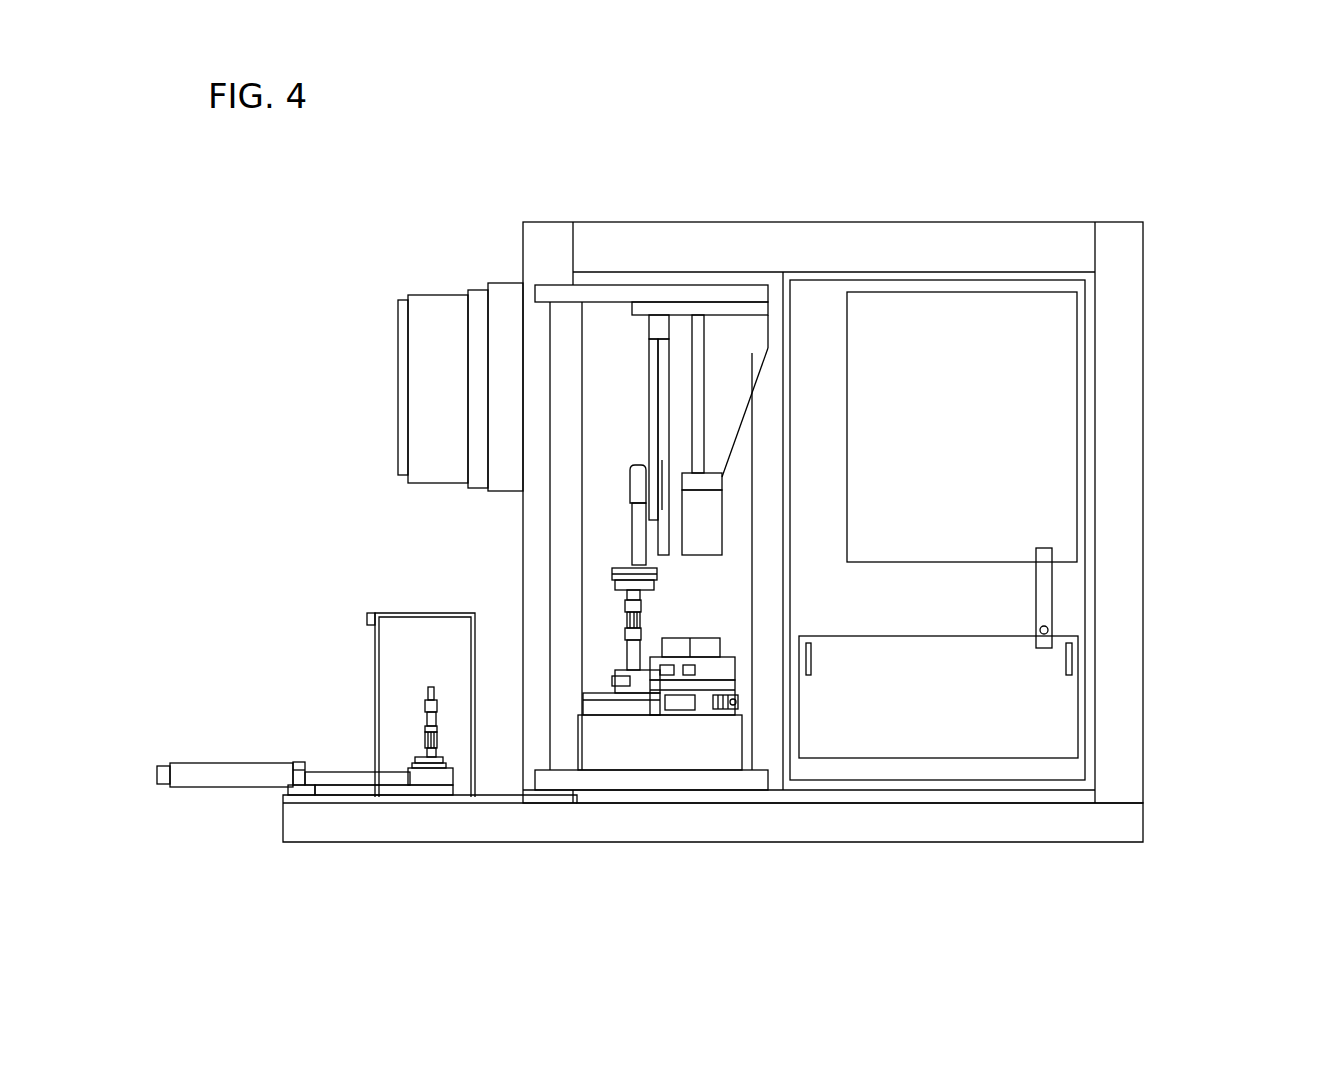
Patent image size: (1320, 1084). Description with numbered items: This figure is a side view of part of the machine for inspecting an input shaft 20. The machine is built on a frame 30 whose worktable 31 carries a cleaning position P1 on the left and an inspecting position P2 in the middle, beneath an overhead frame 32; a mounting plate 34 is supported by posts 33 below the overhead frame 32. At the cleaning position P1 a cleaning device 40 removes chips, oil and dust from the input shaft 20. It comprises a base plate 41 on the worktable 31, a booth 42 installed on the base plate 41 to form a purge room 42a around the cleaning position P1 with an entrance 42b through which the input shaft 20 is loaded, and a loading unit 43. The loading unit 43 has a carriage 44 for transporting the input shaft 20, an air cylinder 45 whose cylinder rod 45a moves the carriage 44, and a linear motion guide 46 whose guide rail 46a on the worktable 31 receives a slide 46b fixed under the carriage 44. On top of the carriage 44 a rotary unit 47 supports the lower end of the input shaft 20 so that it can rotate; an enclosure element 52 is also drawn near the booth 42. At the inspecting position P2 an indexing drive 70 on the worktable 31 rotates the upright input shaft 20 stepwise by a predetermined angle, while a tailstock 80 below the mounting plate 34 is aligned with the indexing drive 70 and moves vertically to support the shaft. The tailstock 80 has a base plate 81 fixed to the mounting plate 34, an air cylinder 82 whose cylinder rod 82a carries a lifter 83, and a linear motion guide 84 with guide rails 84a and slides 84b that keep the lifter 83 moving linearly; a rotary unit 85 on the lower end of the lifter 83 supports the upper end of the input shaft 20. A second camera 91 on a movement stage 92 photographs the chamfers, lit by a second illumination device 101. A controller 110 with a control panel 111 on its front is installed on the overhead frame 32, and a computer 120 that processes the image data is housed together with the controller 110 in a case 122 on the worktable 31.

The input shaft 20 is at (616, 622).
The frame 30 is at (1148, 317).
The worktable 31 is at (962, 827).
The overhead frame 32 is at (975, 228).
The posts 33 is at (563, 355).
The mounting plate 34 is at (560, 296).
The cleaning device 40 is at (366, 603).
The base plate 41 is at (348, 800).
The booth 42 is at (394, 791).
The purge room 42a is at (390, 727).
The entrance 42b is at (375, 706).
The loading unit 43 is at (203, 745).
The carriage 44 is at (418, 795).
The air cylinder 45 is at (197, 783).
The cylinder rod 45a is at (328, 798).
The linear motion guide 46 is at (435, 842).
The guide rail 46a is at (432, 795).
The slide 46b is at (447, 792).
The rotary unit 47 is at (448, 744).
The cover 52 is at (372, 608).
The indexing drive 70 is at (607, 660).
The tailstock 80 is at (638, 373).
The base plate 81 is at (687, 343).
The air cylinder 82 is at (661, 323).
The cylinder rod 82a is at (653, 365).
The lifter 83 is at (640, 477).
The linear motion guide 84 is at (805, 485).
The guide rails 84a is at (663, 430).
The slides 84b is at (722, 482).
The rotary unit 85 is at (672, 568).
The second camera 91 is at (662, 655).
The movement stage 92 is at (688, 718).
The second illumination device 101 is at (705, 645).
The controller 110 is at (1077, 427).
The control panel 111 is at (417, 333).
The computer 120 is at (1080, 708).
The case 122 is at (1087, 498).
The cleaning position P1 is at (403, 658).
The inspecting position P2 is at (597, 578).